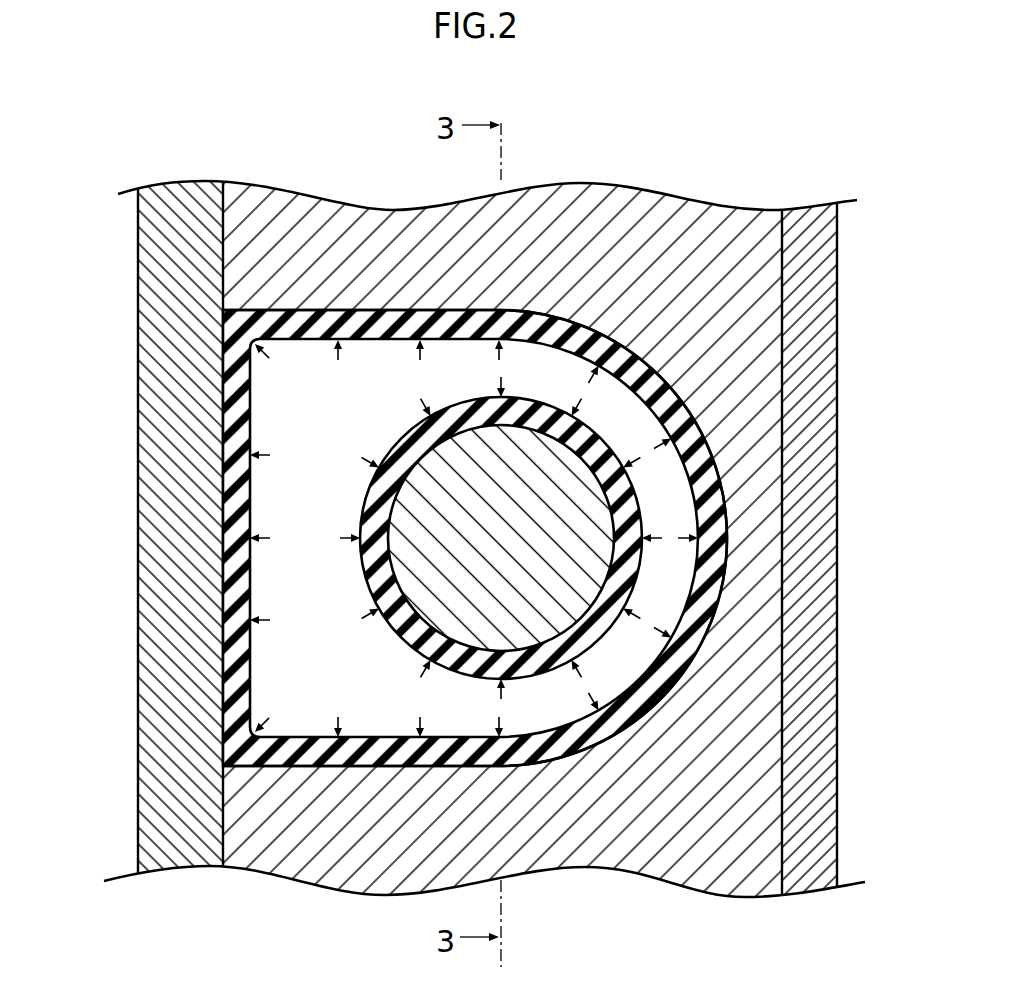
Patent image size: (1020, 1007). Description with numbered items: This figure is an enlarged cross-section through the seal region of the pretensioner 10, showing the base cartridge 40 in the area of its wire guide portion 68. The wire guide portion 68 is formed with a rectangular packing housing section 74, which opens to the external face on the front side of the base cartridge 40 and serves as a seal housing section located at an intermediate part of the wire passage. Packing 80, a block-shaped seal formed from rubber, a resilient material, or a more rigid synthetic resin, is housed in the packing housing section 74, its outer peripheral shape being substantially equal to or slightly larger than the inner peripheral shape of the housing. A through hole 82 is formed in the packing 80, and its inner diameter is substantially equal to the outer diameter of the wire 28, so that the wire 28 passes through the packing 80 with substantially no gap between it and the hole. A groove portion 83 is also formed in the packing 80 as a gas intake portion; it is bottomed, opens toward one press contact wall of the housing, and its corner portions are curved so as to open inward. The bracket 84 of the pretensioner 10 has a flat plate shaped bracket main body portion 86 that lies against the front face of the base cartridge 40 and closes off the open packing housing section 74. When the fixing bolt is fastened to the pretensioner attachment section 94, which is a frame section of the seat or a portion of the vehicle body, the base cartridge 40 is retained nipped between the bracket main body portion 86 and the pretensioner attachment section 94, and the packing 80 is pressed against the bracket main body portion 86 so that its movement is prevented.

The base cartridge 40 is at (487, 516).
The pretensioner 10 is at (703, 184).
The pretensioner attachment section 94 is at (782, 235).
The bracket main body portion 86 is at (130, 540).
The bracket 84 is at (147, 330).
The packing housing section 74 is at (300, 734).
The packing 80 is at (380, 758).
The groove portion 83 is at (462, 733).
The through hole 82 is at (398, 565).
The wire 28 is at (432, 494).
The wire guide portion 68 is at (683, 866).